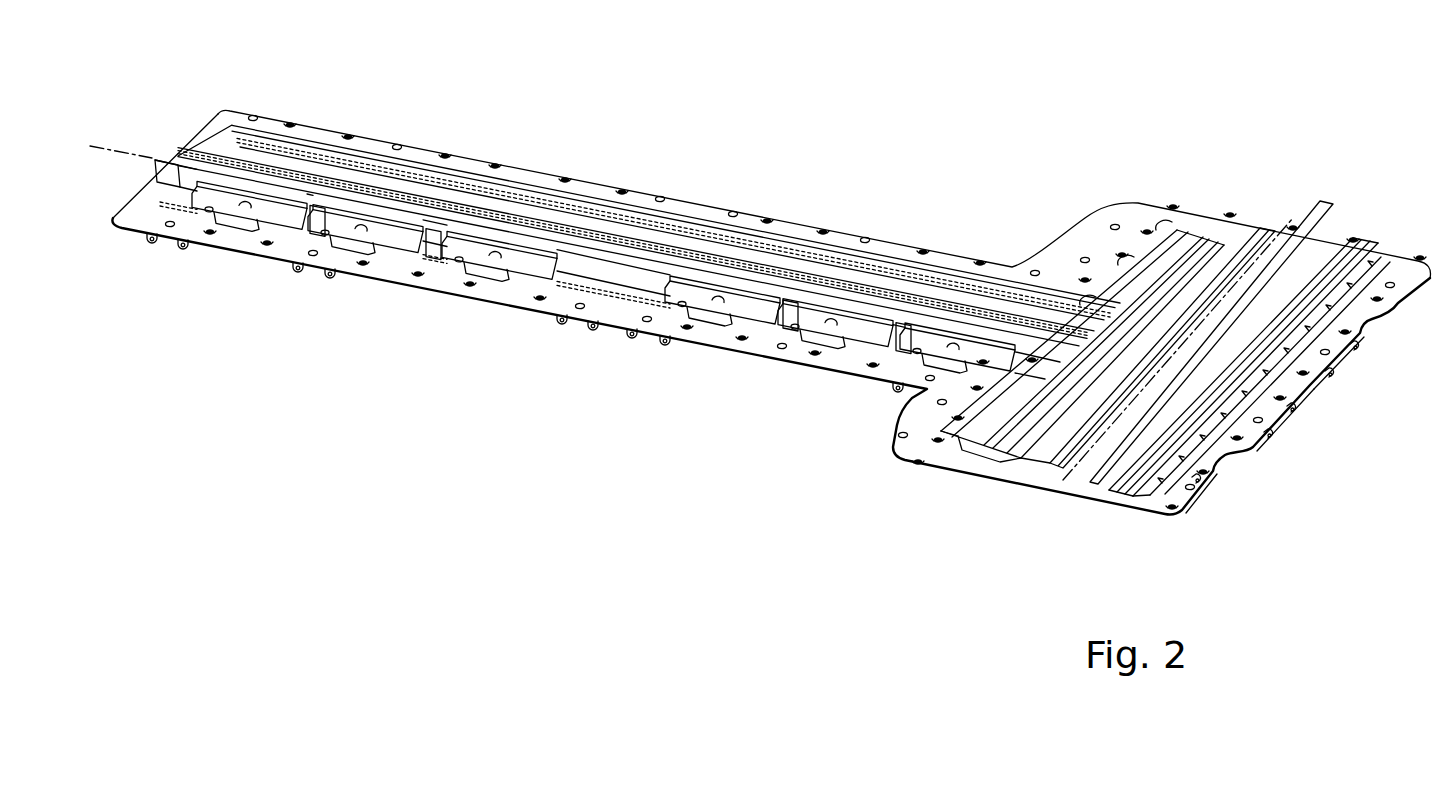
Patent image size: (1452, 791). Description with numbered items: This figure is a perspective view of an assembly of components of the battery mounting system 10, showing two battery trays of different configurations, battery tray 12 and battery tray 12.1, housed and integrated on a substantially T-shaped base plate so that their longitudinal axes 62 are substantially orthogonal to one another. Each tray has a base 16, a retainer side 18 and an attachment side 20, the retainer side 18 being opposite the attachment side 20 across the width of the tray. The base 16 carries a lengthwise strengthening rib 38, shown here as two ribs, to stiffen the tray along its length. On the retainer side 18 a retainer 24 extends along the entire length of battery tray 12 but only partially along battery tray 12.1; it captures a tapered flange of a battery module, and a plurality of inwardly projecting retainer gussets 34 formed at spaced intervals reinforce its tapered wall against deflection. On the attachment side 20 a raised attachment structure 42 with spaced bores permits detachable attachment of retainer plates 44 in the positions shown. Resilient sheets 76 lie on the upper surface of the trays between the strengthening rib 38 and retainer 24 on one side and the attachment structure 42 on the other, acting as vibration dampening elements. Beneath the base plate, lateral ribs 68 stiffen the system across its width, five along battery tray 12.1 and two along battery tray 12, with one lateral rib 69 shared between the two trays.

The battery mounting system 10 is at (1410, 224).
The battery tray 12 is at (1368, 236).
The battery tray 12.1 is at (1007, 267).
The base 16 is at (1058, 485).
The retainer side 18 is at (1180, 453).
The attachment side 20 is at (950, 455).
The retainer 24 is at (1265, 382).
The retainer gusset 34 is at (1300, 323).
The strengthening rib 38 is at (1318, 235).
The attachment structure 42 is at (1066, 308).
The retainer plate 44 is at (274, 207).
The longitudinal axis 62 is at (119, 148).
The lateral rib 68 is at (177, 258).
The lateral rib 69 is at (900, 390).
The resilient sheet 76 is at (1026, 350).